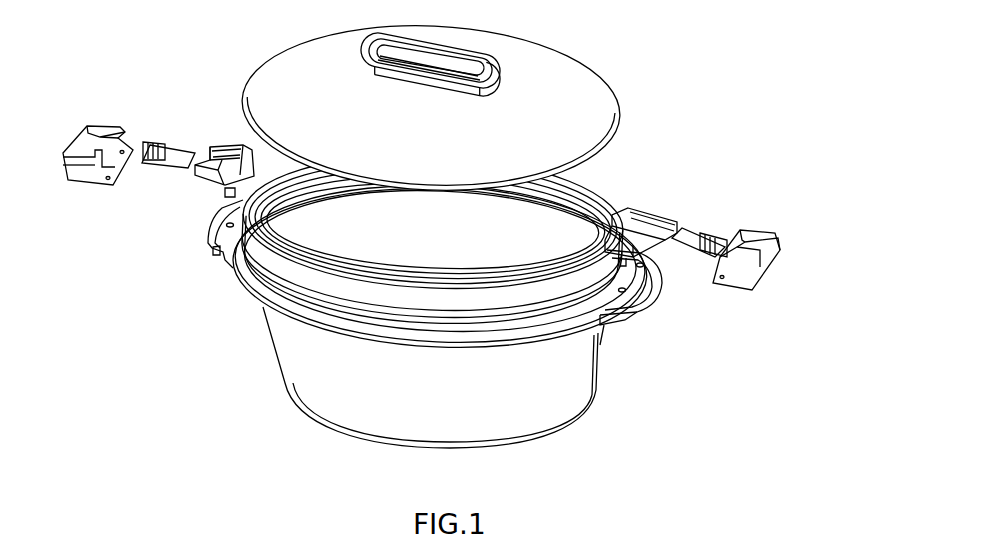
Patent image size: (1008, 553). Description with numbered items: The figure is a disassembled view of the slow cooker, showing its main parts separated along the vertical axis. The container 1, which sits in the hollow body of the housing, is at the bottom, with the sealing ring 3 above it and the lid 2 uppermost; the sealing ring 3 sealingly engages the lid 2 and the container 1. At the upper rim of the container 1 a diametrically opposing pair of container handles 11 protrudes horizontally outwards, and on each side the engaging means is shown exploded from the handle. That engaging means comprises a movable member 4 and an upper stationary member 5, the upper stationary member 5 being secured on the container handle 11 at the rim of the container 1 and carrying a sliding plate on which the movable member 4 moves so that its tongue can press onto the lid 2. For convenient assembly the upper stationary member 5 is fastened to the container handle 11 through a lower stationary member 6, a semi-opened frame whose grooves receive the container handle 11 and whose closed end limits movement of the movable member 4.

The container 1 is at (598, 387).
The lid 2 is at (568, 88).
The sealing ring 3 is at (612, 182).
The movable member 4 is at (165, 142).
The upper stationary member 5 is at (222, 145).
The lower stationary member 6 is at (106, 132).
The container handle 11 is at (640, 290).